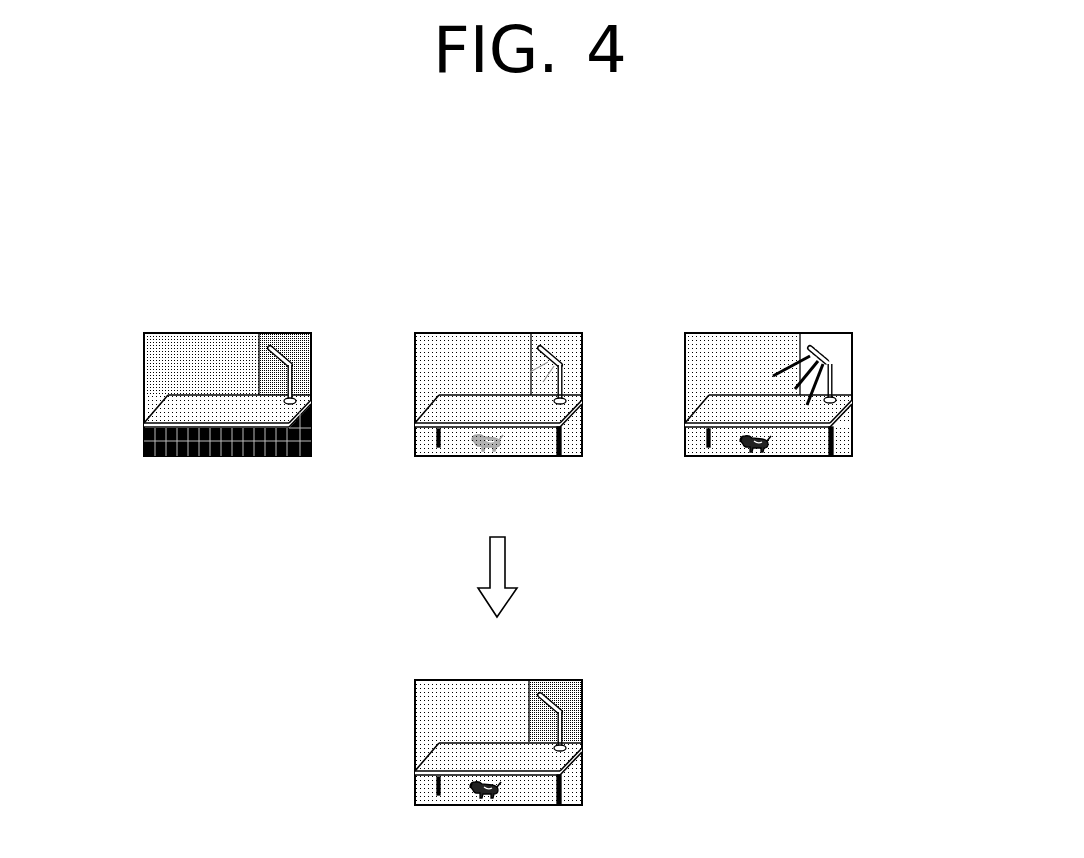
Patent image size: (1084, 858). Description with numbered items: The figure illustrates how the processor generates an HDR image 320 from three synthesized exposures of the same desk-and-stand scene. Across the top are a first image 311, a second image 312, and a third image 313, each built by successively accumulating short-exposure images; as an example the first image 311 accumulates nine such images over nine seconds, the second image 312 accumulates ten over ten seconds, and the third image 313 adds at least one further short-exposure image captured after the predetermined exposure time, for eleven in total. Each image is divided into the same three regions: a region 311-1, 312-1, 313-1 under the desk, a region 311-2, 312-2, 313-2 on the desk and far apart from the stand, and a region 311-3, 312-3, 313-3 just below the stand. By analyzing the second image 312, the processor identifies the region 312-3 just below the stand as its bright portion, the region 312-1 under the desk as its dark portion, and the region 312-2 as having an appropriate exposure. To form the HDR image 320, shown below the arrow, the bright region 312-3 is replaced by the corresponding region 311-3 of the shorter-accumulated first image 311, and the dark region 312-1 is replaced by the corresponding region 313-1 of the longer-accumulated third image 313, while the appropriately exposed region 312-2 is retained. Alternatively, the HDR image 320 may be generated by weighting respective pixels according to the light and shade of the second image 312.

The first image 311 is at (291, 333).
The region under the desk in the first image 311-1 is at (222, 458).
The region on the desk far apart from the stand in the first image 311-2 is at (152, 393).
The region just below the stand in the first image 311-3 is at (311, 379).
The second image 312 is at (562, 333).
The region under the desk in the second image 312-1 is at (492, 458).
The region on the desk far apart from the stand in the second image 312-2 is at (423, 393).
The region just below the stand in the second image 312-3 is at (582, 379).
The third image 313 is at (832, 333).
The region under the desk in the third image 313-1 is at (762, 458).
The region on the desk far apart from the stand in the third image 313-2 is at (692, 393).
The region just below the stand in the third image 313-3 is at (852, 379).
The HDR image 320 is at (562, 680).